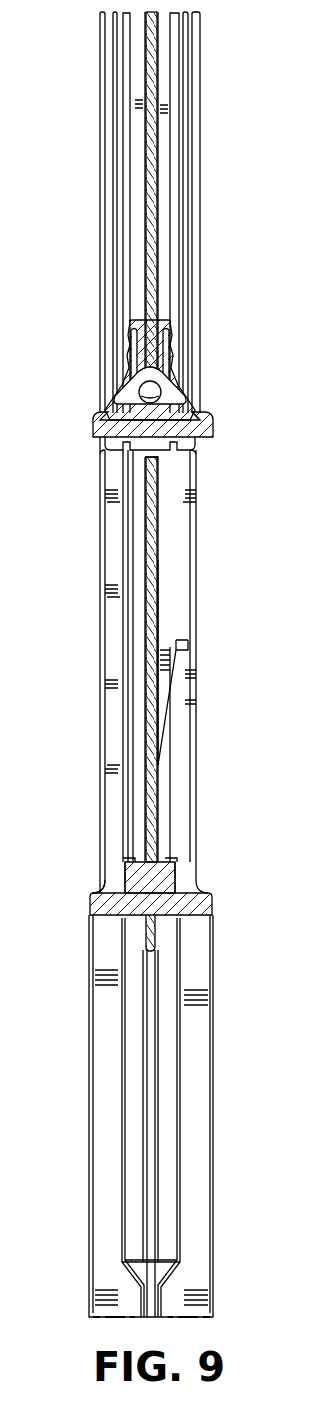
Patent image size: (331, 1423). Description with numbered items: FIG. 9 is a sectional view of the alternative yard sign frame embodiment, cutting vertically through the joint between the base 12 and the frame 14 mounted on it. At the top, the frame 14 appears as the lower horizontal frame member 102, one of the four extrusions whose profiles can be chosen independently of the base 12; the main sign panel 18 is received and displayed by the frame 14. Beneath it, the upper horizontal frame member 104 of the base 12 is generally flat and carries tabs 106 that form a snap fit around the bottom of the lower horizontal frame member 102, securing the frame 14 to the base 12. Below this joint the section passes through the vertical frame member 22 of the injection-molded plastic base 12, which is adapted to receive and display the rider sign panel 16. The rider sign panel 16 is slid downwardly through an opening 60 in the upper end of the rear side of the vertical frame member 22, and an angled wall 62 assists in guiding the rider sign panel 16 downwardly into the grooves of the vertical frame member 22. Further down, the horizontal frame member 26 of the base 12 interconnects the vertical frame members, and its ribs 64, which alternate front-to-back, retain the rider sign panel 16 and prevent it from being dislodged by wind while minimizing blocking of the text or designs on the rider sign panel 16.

The base 12 is at (216, 709).
The frame 14 is at (86, 157).
The rider sign panel 16 is at (155, 177).
The main sign panel 18 is at (158, 484).
The vertical frame member 22 is at (90, 1086).
The horizontal frame member 26 is at (90, 906).
The opening 60 is at (162, 597).
The angled wall 62 is at (178, 650).
The rib 64 is at (132, 858).
The lower horizontal frame member 102 is at (134, 327).
The upper horizontal frame member 104 is at (125, 388).
The tabs 106 is at (100, 412).